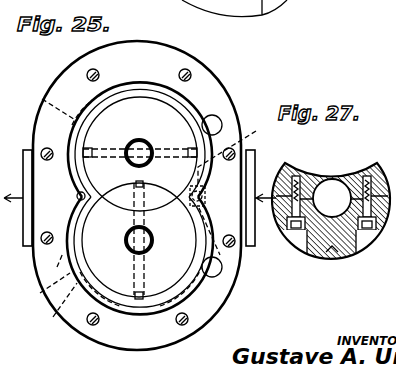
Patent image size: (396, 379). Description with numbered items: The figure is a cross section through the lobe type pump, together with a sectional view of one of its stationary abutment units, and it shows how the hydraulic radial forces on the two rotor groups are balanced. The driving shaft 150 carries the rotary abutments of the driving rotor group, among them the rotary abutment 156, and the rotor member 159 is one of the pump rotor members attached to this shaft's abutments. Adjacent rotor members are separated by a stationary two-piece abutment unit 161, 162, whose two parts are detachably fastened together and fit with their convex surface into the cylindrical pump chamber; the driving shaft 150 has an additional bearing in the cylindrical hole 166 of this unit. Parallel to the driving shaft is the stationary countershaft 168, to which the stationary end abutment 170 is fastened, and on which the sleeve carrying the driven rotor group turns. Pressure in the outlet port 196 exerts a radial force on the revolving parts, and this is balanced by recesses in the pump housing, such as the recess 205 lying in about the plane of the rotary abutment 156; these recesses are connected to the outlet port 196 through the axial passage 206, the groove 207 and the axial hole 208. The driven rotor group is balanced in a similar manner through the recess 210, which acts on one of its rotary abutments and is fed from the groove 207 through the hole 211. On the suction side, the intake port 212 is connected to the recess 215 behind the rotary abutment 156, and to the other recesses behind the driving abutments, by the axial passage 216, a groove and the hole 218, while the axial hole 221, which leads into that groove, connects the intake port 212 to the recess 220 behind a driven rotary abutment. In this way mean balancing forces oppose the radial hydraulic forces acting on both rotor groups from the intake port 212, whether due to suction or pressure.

In FIG. 25, the driving shaft 150 is at (136, 237).
In FIG. 25, the rotary abutment 156 is at (159, 272).
In FIG. 25, the rotor member 159 is at (278, 10).
In FIG. 27, the stationary abutment unit part 161 is at (331, 255).
In FIG. 27, the stationary abutment unit part 162 is at (306, 170).
In FIG. 27, the cylindrical hole 166 is at (322, 215).
In FIG. 25, the stationary countershaft 168 is at (141, 150).
In FIG. 25, the stationary end abutment 170 is at (117, 115).
In FIG. 25, the outlet port 196 is at (74, 184).
In FIG. 25, the recess 205 is at (218, 256).
In FIG. 25, the axial passage 206 is at (78, 198).
In FIG. 25, the groove 207 is at (125, 308).
In FIG. 25, the axial hole 208 is at (221, 271).
In FIG. 25, the recess 210 is at (241, 156).
In FIG. 25, the hole 211 is at (215, 124).
In FIG. 25, the intake port 212 is at (205, 184).
In FIG. 25, the recess 215 is at (52, 294).
In FIG. 25, the axial passage 216 is at (204, 199).
In FIG. 25, the hole 218 is at (45, 291).
In FIG. 25, the recess 220 is at (62, 134).
In FIG. 25, the axial hole 221 is at (47, 104).